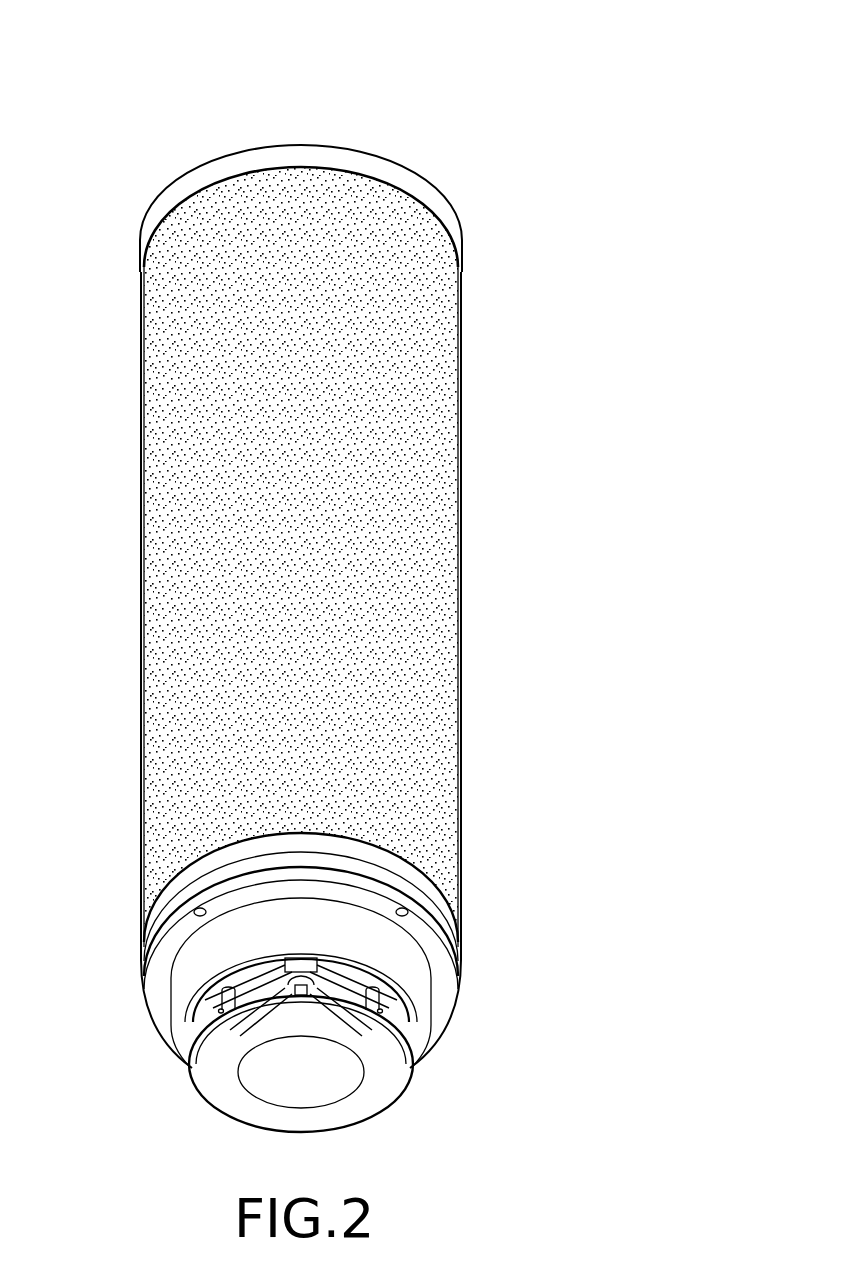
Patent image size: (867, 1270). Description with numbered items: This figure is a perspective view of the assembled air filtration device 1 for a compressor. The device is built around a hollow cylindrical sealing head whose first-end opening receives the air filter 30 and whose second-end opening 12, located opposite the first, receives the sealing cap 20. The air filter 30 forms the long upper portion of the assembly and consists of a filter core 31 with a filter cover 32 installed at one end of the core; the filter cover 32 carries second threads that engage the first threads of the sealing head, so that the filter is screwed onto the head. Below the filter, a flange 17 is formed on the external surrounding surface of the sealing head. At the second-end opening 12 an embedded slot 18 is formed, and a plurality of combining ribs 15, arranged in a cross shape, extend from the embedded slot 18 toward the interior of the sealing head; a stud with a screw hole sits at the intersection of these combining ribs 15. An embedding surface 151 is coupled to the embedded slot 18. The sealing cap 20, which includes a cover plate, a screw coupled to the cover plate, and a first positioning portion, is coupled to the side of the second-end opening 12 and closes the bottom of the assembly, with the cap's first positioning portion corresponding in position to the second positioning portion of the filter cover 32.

The air filtration device 1 is at (305, 25).
The air filter 30 is at (477, 466).
The filter core 31 is at (443, 555).
The filter cover 32 is at (182, 872).
The flange 17 is at (173, 908).
The second-end opening 12 is at (183, 1023).
The combining ribs 15 is at (345, 977).
The embedding surface 151 is at (355, 990).
The embedded slot 18 is at (193, 1053).
The sealing cap 20 is at (375, 1092).